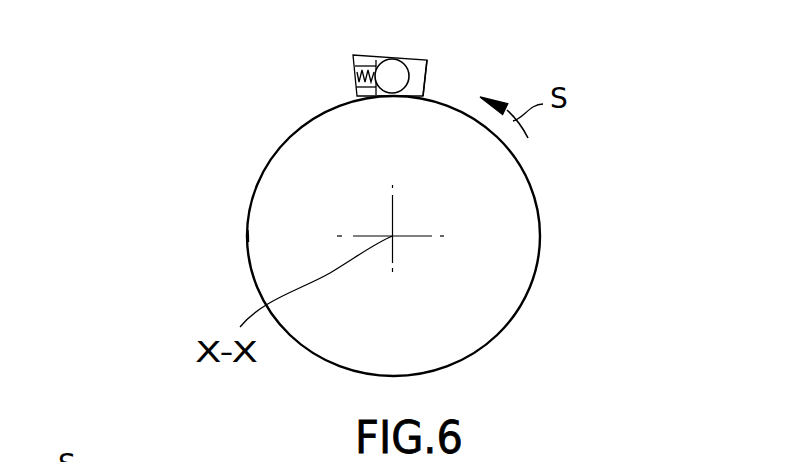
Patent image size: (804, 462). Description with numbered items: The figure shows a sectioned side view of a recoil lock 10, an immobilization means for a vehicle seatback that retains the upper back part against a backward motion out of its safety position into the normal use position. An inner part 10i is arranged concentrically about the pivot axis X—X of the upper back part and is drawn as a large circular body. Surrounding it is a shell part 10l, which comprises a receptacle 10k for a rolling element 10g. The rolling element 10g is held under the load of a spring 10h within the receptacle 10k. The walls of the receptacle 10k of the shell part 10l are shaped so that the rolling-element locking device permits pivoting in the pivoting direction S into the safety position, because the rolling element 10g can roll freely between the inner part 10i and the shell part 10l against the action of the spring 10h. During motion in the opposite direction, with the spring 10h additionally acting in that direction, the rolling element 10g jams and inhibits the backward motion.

The recoil lock 10 is at (118, 147).
The rolling element 10g is at (398, 70).
The spring 10h is at (355, 77).
The inner part 10i is at (262, 200).
The receptacle 10k is at (410, 75).
The shell part 10l is at (357, 56).